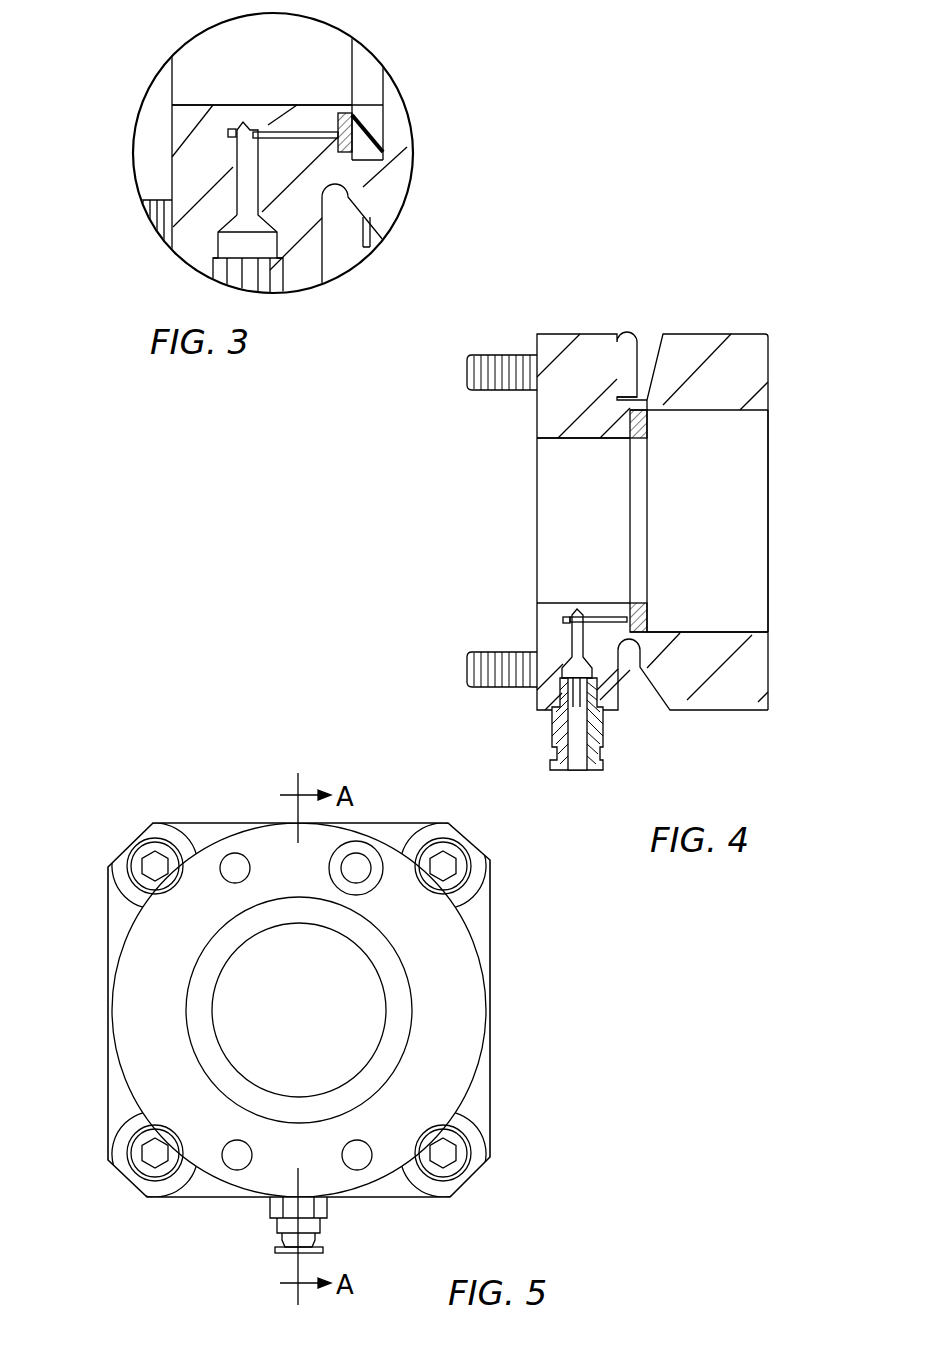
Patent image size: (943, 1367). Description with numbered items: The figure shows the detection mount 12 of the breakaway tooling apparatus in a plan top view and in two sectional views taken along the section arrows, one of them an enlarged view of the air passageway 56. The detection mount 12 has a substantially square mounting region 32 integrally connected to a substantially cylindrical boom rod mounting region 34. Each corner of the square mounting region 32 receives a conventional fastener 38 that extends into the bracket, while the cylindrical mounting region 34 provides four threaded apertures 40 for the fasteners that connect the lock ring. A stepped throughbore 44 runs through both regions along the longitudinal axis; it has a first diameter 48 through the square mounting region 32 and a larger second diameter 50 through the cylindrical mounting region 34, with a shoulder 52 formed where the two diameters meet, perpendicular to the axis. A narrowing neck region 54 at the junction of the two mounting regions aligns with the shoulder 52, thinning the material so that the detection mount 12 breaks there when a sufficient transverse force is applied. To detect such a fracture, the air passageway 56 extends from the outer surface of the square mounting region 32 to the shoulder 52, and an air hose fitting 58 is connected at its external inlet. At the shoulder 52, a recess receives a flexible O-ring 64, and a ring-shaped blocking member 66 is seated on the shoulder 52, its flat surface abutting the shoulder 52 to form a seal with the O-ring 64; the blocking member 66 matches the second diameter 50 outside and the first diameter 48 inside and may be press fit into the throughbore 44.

In FIG. 4, the detection mount 12 is at (702, 737).
In FIG. 5, the detection mount 12 is at (118, 1221).
In FIG. 4, the substantially square mounting region 32 is at (548, 334).
In FIG. 5, the substantially square mounting region 32 is at (108, 1105).
In FIG. 4, the substantially cylindrical boom rod mounting region 34 is at (693, 333).
In FIG. 5, the substantially cylindrical boom rod mounting region 34 is at (108, 937).
In FIG. 4, the conventional fastener 38 is at (488, 392).
In FIG. 5, the conventional fastener 38 is at (157, 840).
In FIG. 5, the threaded apertures 40 is at (234, 855).
In FIG. 4, the stepped throughbore 44 is at (768, 535).
In FIG. 3, the first diameter 48 is at (233, 103).
In FIG. 4, the first diameter 48 is at (577, 438).
In FIG. 4, the second diameter 50 is at (717, 633).
In FIG. 3, the shoulder 52 is at (358, 112).
In FIG. 4, the shoulder 52 is at (648, 424).
In FIG. 4, the narrowing neck region 54 is at (650, 353).
In FIG. 3, the air passageway 56 is at (240, 160).
In FIG. 4, the air passageway 56 is at (572, 637).
In FIG. 4, the air hose fitting 58 is at (607, 763).
In FIG. 5, the air hose fitting 58 is at (318, 1243).
In FIG. 3, the flexible O-ring 64 is at (383, 133).
In FIG. 3, the blocking member 66 is at (370, 155).
In FIG. 4, the blocking member 66 is at (647, 436).
In FIG. 5, the blocking member 66 is at (407, 1020).